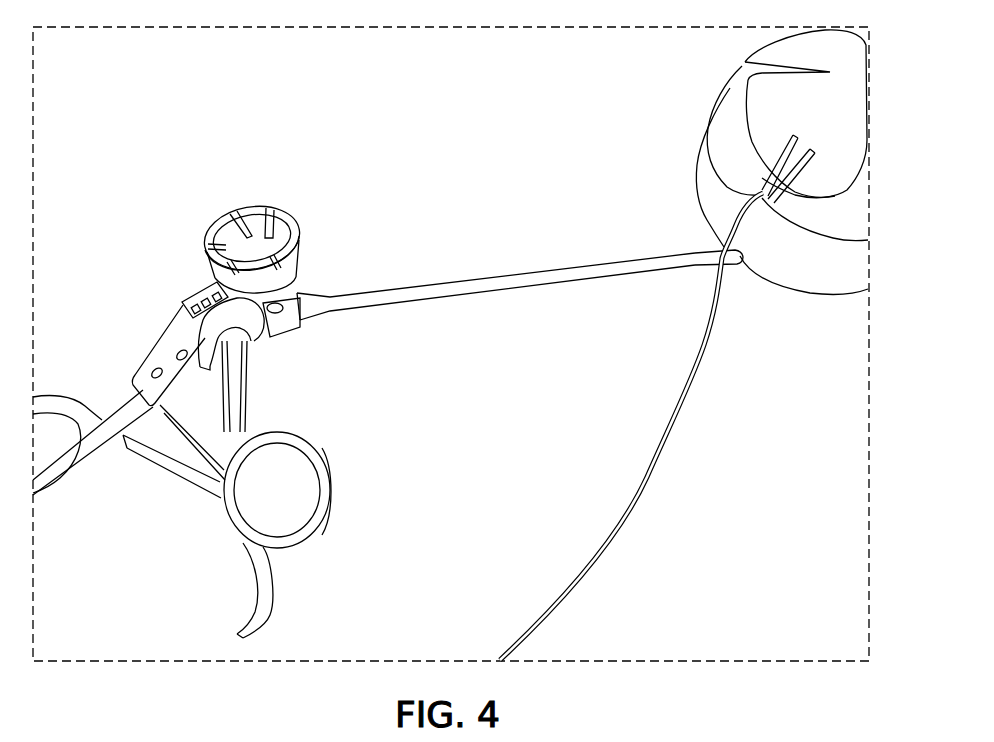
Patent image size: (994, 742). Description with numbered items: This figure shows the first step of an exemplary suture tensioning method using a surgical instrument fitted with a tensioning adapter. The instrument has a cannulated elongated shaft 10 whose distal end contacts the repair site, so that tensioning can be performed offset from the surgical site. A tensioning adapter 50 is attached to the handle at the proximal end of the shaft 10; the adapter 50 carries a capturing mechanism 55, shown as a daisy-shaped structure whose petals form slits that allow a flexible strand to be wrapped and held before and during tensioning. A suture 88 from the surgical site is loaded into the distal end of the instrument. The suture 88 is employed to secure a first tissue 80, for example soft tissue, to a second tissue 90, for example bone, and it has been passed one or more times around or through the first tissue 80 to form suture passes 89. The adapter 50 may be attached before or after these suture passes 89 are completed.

The elongated shaft 10 is at (431, 296).
The tensioning adapter 50 is at (168, 363).
The capturing mechanism 55 is at (226, 217).
The first tissue 80 is at (843, 163).
The suture 88 is at (690, 392).
The suture passes 89 is at (741, 131).
The second tissue 90 is at (843, 260).